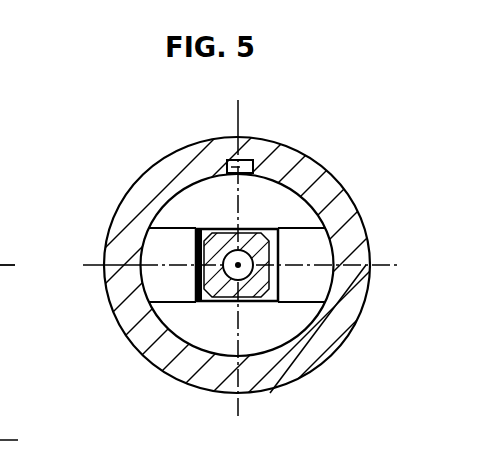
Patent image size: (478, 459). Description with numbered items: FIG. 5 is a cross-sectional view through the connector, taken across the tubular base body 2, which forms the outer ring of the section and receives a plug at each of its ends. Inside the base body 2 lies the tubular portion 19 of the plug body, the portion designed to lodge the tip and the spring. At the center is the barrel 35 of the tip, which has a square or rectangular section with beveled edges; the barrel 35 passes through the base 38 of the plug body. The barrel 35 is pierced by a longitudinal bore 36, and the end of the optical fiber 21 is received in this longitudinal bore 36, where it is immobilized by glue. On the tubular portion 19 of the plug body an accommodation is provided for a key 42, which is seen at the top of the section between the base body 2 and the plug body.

The tubular base body 2 is at (284, 361).
The tubular portion 19 is at (172, 290).
The optical fiber 21 is at (251, 304).
The barrel 35 is at (212, 303).
The longitudinal bore 36 is at (228, 227).
The base of plug body 38 is at (240, 390).
The key 42 is at (263, 154).